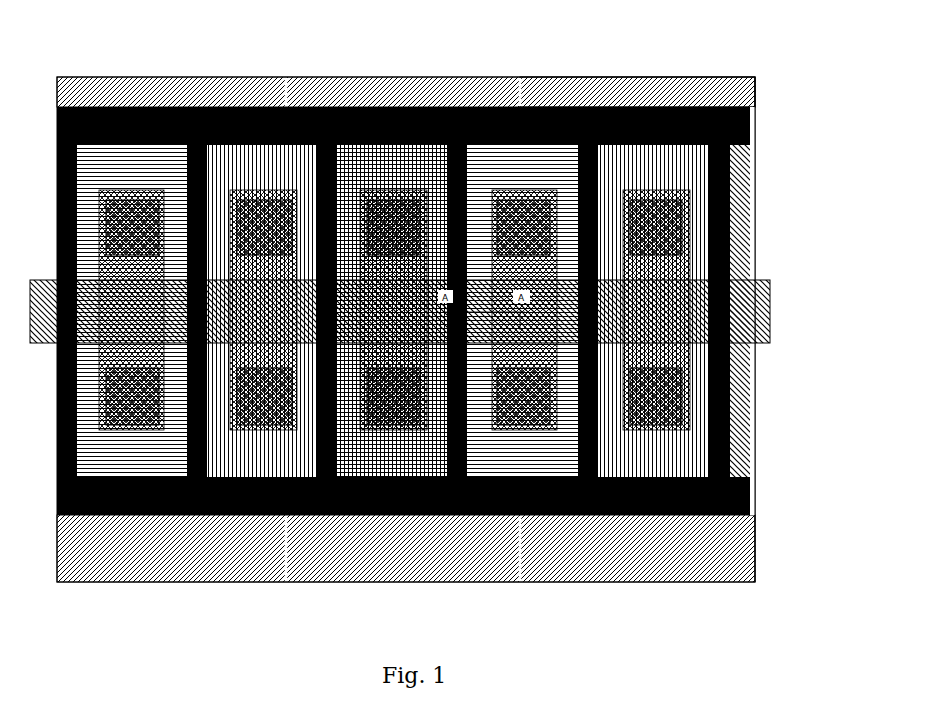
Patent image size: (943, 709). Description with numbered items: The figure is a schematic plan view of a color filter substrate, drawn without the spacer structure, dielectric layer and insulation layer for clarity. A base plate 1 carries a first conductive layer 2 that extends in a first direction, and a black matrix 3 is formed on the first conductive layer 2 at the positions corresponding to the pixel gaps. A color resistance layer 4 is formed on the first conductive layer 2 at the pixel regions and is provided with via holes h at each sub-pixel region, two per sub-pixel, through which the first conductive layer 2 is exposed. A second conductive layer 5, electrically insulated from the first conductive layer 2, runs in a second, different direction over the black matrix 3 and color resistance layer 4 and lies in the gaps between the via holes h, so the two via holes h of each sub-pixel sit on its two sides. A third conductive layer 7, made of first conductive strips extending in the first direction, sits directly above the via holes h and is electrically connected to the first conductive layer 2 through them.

The base plate 1 is at (520, 95).
The first conductive layer 2 is at (673, 92).
The black matrix 3 is at (752, 110).
The color resistance layer 4 is at (690, 170).
The second conductive layer 5 is at (753, 298).
The third conductive layer 7 is at (668, 357).
The via holes h is at (668, 233).